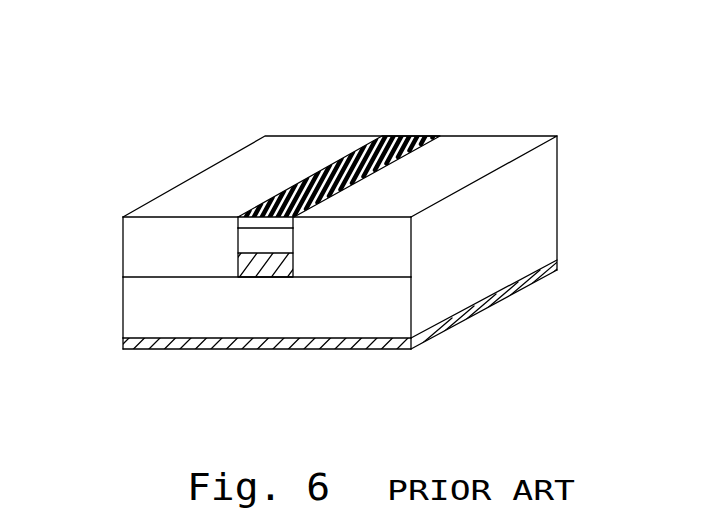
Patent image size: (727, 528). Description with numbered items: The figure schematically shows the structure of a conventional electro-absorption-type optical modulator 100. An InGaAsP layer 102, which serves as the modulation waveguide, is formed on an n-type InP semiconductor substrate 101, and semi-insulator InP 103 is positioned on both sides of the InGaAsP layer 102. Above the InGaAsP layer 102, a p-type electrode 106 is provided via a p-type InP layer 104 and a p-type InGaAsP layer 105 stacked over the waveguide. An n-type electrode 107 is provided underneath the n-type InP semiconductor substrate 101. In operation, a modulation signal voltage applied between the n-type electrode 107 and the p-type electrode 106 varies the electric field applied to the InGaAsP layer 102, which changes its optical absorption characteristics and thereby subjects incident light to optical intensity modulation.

The electro-absorption-type optical modulator 100 is at (607, 26).
The n-type InP semiconductor substrate 101 is at (200, 315).
The InGaAsP layer 102 is at (270, 275).
The semi-insulator InP 103 is at (143, 261).
The p-type InP layer 104 is at (248, 243).
The p-type InGaAsP layer 105 is at (267, 223).
The p-type electrode 106 is at (400, 134).
The n-type electrode 107 is at (527, 287).